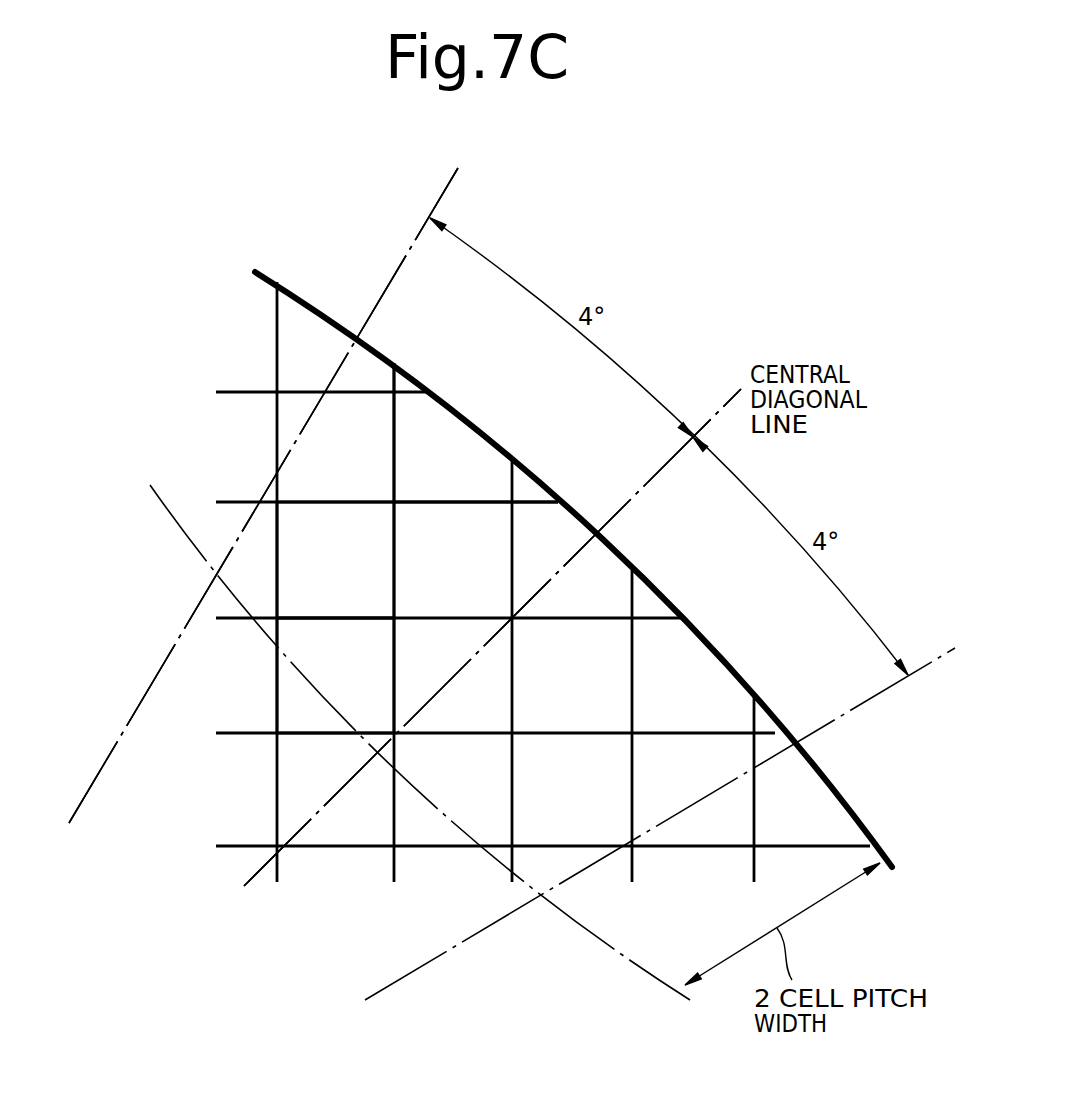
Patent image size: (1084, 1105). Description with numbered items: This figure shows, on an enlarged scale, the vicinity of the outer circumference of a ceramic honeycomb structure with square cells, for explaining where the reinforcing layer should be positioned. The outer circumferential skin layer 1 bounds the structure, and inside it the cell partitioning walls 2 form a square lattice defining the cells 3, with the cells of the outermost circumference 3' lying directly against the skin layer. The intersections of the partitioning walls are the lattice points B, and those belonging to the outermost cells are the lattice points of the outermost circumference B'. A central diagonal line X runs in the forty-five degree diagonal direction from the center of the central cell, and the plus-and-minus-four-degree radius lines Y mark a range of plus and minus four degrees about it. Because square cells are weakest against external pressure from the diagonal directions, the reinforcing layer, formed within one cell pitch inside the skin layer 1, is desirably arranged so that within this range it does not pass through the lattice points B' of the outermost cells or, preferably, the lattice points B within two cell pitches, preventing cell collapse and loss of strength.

The outer circumferential skin layer 1 is at (708, 638).
The cell partitioning walls 2 is at (712, 727).
The cells 3 is at (335, 617).
The cells of the outermost circumference 3' is at (476, 432).
The lattice points B is at (546, 769).
The lattice points of the outermost circumference B' is at (512, 595).
The central diagonal lines X is at (728, 398).
The ±4° radius lines Y is at (446, 193).